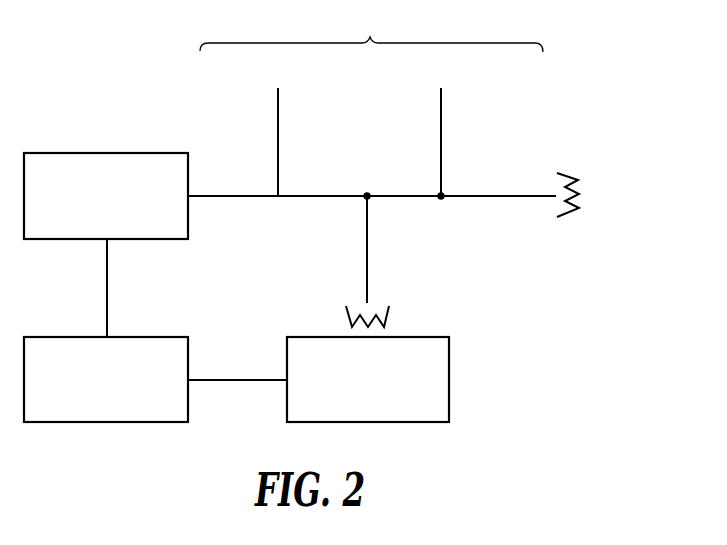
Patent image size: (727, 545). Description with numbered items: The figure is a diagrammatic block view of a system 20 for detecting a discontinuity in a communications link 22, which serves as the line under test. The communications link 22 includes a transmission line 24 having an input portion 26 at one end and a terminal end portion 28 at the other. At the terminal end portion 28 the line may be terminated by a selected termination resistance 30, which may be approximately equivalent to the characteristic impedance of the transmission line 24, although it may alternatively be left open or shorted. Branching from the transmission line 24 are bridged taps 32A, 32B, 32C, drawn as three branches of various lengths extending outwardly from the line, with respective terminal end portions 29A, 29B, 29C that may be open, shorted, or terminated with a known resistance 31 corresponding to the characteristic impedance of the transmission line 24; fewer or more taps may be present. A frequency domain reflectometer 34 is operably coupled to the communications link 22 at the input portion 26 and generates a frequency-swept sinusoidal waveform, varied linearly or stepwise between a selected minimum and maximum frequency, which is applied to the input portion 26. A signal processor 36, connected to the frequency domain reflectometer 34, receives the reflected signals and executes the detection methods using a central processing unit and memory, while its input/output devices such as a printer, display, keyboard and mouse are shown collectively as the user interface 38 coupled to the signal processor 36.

The system 20 is at (88, 50).
The communications link 22 is at (371, 29).
The transmission line 24 is at (328, 194).
The input portion 26 is at (203, 176).
The terminal end portion 28 is at (546, 212).
The terminal end portion 29A is at (384, 290).
The terminal end portion 29B is at (291, 83).
The terminal end portion 29C is at (456, 83).
The termination resistance 30 is at (568, 174).
The known resistance 31 is at (345, 320).
The bridged tap 32A is at (368, 250).
The bridged tap 32B is at (279, 142).
The bridged tap 32C is at (442, 142).
The frequency domain reflectometer 34 is at (107, 153).
The signal processor 36 is at (131, 337).
The user interface 38 is at (396, 337).